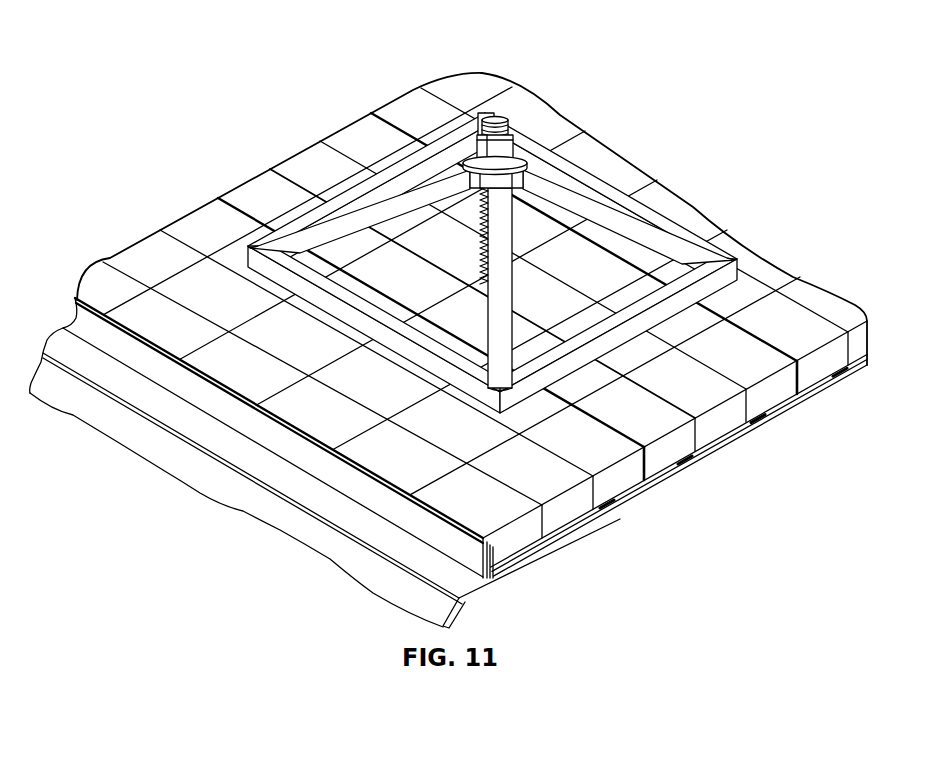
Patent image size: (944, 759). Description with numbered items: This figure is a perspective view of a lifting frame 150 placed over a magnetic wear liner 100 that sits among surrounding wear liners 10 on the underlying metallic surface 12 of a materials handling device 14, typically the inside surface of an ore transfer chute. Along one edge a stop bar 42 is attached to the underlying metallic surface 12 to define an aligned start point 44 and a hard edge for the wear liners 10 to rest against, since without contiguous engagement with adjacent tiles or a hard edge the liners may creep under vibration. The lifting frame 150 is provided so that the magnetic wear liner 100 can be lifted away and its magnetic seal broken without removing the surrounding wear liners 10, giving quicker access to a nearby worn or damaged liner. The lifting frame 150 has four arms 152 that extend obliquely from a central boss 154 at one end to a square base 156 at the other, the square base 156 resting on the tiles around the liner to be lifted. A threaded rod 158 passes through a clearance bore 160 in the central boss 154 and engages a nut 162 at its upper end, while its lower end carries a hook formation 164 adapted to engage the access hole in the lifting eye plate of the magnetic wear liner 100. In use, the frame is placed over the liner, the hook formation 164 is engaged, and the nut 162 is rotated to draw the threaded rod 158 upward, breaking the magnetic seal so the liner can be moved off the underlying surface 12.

The wear liner 10 is at (359, 391).
The underlying metallic surface 12 is at (820, 385).
The materials handling device 14 is at (708, 458).
The stop bar 42 is at (235, 447).
The aligned start point 44 is at (489, 582).
The magnetic wear liner 100 is at (515, 219).
The lifting frame 150 is at (650, 222).
The arms 152 is at (479, 115).
The central boss 154 is at (600, 192).
The square base 156 is at (660, 300).
The threaded rod 158 is at (478, 213).
The clearance bore 160 is at (516, 152).
The nut 162 is at (514, 135).
The hook formation 164 is at (484, 270).